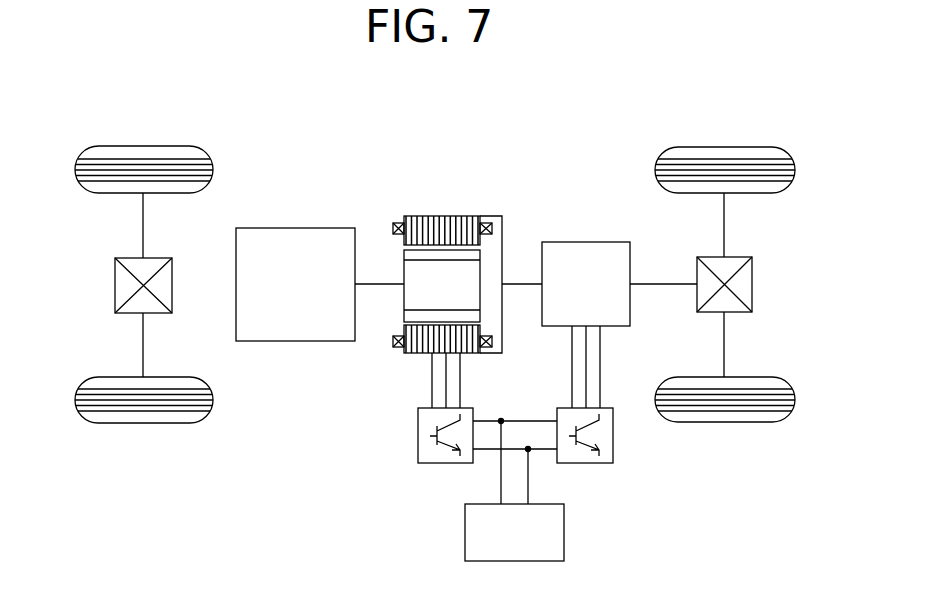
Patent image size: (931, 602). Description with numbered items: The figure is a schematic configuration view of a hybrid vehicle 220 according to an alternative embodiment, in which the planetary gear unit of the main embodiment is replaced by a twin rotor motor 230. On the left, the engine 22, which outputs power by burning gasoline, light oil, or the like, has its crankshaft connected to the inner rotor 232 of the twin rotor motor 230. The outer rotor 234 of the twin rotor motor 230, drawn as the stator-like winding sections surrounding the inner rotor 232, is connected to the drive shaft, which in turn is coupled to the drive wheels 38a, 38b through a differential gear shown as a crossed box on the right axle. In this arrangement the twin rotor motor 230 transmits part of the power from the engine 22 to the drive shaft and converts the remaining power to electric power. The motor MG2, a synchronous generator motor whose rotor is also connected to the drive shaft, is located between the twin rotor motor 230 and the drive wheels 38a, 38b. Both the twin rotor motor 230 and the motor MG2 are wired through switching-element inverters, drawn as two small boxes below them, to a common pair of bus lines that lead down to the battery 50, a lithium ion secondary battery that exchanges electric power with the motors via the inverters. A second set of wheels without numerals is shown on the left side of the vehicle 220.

The hybrid vehicle 220 is at (556, 106).
The engine 22 is at (297, 228).
The twin rotor motor 230 is at (477, 160).
The inner rotor 232 is at (403, 270).
The outer rotor 234 is at (448, 216).
The motor MG2 is at (585, 241).
The drive wheel 38a is at (725, 147).
The drive wheel 38b is at (725, 422).
The battery 50 is at (565, 532).